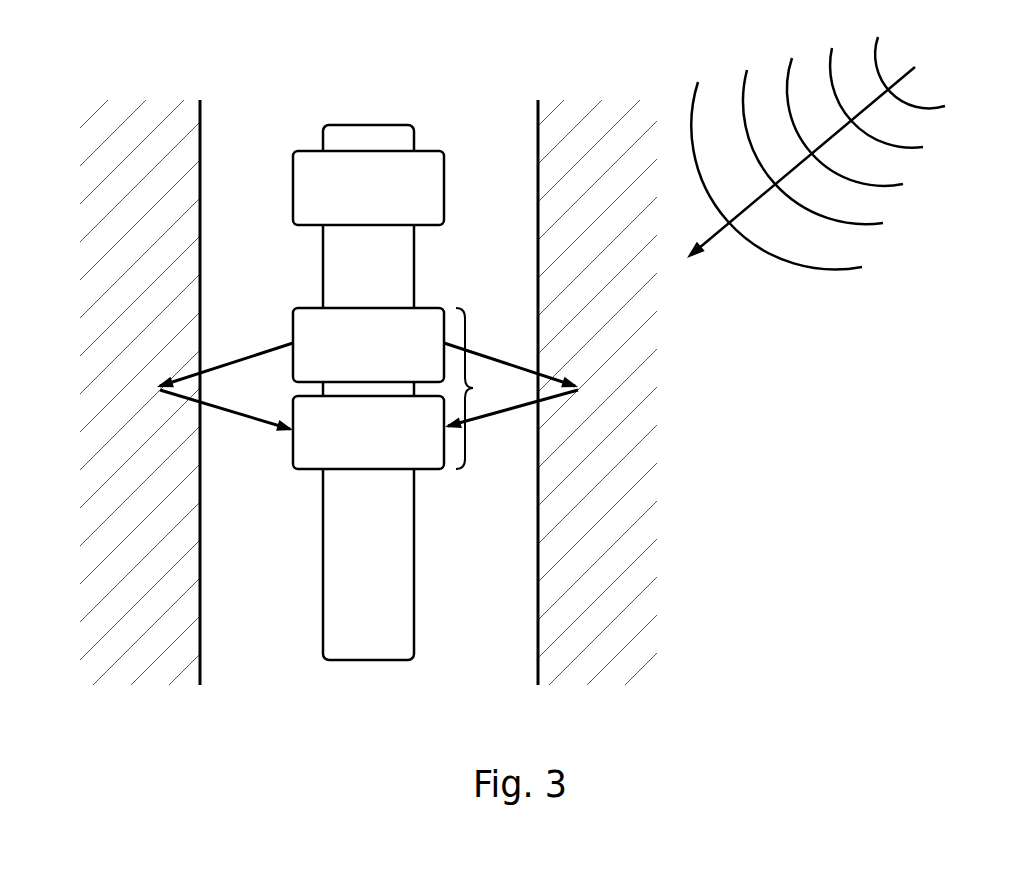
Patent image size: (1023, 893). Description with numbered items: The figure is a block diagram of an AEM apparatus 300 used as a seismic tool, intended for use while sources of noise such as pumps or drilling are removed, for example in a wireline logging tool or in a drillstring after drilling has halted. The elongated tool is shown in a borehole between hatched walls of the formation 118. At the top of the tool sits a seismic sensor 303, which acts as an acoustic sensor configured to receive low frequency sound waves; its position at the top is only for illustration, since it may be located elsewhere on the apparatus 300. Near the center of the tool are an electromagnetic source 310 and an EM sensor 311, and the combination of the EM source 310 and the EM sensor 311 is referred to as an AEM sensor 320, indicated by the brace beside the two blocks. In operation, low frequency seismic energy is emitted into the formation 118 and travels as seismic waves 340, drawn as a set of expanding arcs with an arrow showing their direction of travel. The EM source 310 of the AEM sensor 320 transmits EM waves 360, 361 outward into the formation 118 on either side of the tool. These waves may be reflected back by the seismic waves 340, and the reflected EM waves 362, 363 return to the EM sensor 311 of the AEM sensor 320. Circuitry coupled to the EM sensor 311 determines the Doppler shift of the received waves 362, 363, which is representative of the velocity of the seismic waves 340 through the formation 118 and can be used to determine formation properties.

The AEM apparatus 300 is at (415, 74).
The seismic sensor 303 is at (424, 150).
The electromagnetic source 310 is at (424, 308).
The EM sensor 311 is at (424, 470).
The AEM sensor 320 is at (488, 388).
The seismic waves 340 is at (823, 283).
The EM wave 360 is at (242, 358).
The EM wave 361 is at (497, 357).
The reflected EM wave 362 is at (240, 414).
The reflected EM wave 363 is at (497, 415).
The formation 118 is at (623, 532).